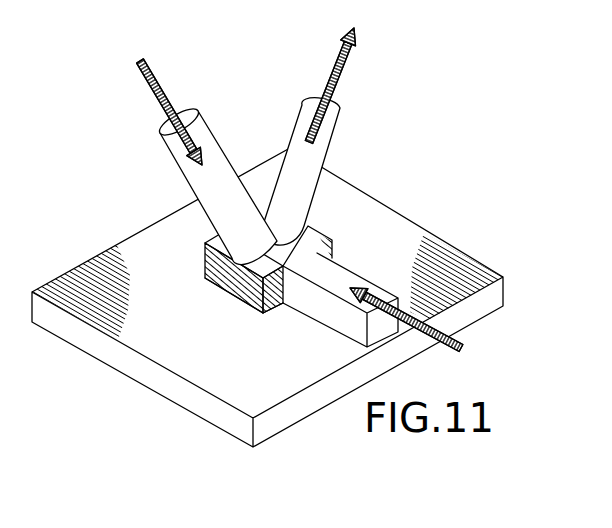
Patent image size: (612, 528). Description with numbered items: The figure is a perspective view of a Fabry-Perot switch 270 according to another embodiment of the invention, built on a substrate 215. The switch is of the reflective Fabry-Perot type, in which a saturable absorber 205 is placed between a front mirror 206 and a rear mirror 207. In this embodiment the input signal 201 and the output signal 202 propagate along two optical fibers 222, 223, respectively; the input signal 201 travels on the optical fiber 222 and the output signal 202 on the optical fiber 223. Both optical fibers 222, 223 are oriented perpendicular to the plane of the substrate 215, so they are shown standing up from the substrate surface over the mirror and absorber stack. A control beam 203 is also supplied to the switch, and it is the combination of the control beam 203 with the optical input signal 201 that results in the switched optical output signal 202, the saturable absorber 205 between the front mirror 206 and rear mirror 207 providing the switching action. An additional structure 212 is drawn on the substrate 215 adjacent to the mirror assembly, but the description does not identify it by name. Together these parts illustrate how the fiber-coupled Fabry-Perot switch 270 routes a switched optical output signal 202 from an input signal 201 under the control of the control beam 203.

The optical input signal 201 is at (149, 68).
The switched optical output signal 202 is at (346, 63).
The control beam 203 is at (462, 349).
The saturable absorber material 205 is at (228, 288).
The front mirror 206 is at (204, 244).
The rear mirror 207 is at (253, 309).
The support bar 212 is at (320, 307).
The substrate 215 is at (430, 240).
The optical fiber 222 is at (190, 168).
The optical fiber 223 is at (322, 150).
The Fabry-Perot switch 270 is at (432, 192).